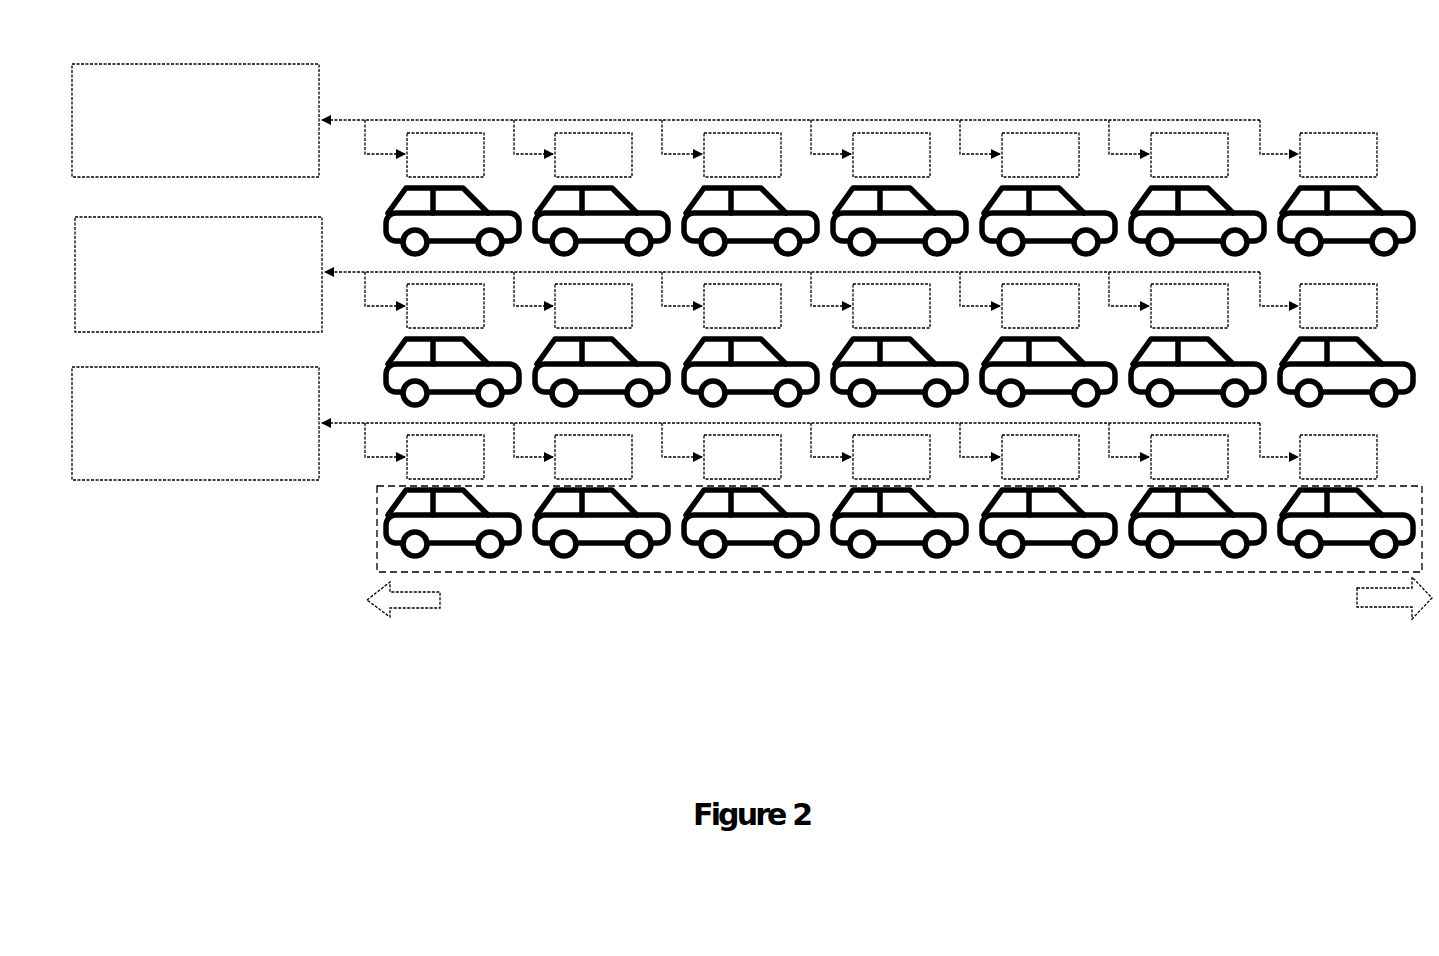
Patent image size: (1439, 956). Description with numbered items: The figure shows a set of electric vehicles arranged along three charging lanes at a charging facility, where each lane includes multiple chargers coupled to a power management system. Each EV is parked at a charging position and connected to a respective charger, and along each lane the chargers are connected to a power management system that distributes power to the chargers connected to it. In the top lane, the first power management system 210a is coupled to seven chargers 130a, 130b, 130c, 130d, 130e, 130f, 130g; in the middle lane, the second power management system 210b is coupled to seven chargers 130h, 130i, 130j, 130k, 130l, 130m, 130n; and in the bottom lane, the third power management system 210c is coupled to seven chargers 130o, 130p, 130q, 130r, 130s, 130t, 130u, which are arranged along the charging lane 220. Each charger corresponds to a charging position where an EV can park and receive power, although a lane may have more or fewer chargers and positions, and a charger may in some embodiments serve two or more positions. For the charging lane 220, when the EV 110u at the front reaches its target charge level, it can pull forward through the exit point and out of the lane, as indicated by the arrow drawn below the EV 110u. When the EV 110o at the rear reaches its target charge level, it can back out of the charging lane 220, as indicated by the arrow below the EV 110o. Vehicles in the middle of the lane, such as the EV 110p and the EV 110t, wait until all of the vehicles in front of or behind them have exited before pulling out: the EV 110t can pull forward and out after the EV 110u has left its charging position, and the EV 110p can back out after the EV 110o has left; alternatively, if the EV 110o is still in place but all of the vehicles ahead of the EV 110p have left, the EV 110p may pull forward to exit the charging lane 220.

The EV 110o is at (458, 553).
The EV 110p is at (605, 553).
The EV 110t is at (1197, 552).
The EV 110u is at (1337, 552).
The charger 130a is at (421, 166).
The charger 130b is at (569, 166).
The charger 130c is at (718, 166).
The charger 130d is at (867, 166).
The charger 130e is at (1016, 166).
The charger 130f is at (1165, 166).
The charger 130g is at (1314, 166).
The charger 130h is at (421, 317).
The charger 130i is at (569, 317).
The charger 130j is at (718, 317).
The charger 130k is at (867, 317).
The charger 130l is at (1016, 317).
The charger 130m is at (1165, 317).
The charger 130n is at (1314, 317).
The charger 130o is at (421, 468).
The charger 130p is at (569, 468).
The charger 130q is at (718, 468).
The charger 130r is at (867, 468).
The charger 130s is at (1016, 468).
The charger 130t is at (1165, 468).
The charger 130u is at (1314, 468).
The power management system 1 210a is at (228, 147).
The power management system 2 210b is at (230, 302).
The power management system 3 210c is at (228, 451).
The charging lane 220 is at (370, 552).